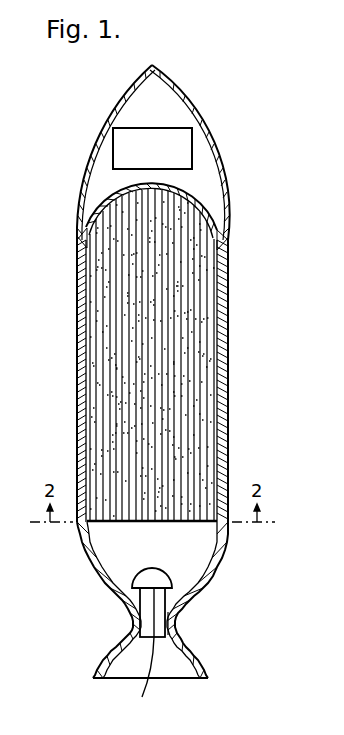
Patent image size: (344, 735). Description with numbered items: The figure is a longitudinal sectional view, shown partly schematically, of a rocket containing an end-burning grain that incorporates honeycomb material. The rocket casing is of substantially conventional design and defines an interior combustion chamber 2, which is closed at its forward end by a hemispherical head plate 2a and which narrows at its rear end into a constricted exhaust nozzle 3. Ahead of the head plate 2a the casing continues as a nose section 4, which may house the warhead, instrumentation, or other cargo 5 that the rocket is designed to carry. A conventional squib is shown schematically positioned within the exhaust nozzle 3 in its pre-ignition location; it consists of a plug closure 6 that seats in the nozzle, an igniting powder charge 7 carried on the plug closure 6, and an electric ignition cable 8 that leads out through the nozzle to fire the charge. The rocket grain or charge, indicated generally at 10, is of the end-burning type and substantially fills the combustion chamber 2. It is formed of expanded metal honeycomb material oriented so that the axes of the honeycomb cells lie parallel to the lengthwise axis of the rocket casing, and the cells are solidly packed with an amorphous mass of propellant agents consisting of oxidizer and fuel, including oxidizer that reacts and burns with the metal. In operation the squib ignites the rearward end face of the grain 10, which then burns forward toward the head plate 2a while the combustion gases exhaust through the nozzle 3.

The combustion chamber 2 is at (82, 424).
The hemispherical head plate 2a is at (199, 188).
The constricted exhaust nozzle 3 is at (173, 618).
The nose section 4 is at (185, 108).
The cargo 5 is at (179, 148).
The plug closure 6 is at (141, 608).
The igniting powder charge 7 is at (153, 573).
The electric ignition cable 8 is at (146, 690).
The rocket grain 10 is at (100, 345).